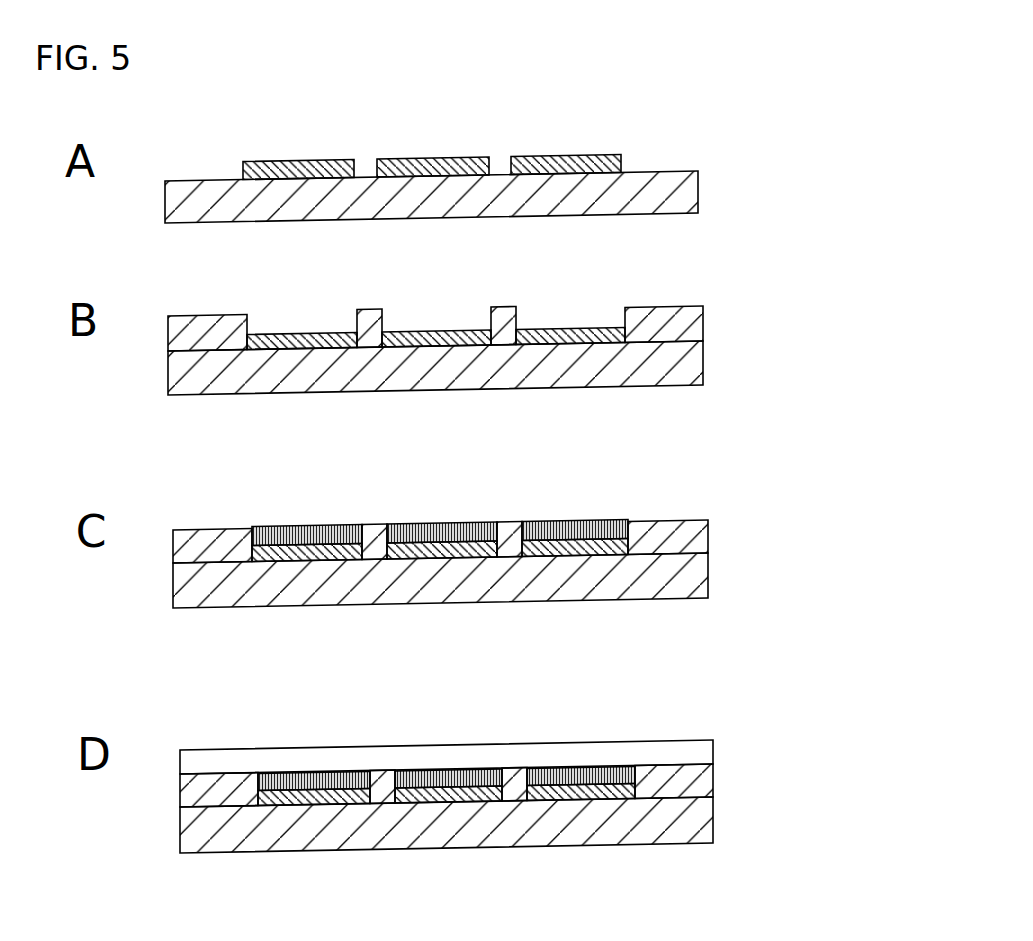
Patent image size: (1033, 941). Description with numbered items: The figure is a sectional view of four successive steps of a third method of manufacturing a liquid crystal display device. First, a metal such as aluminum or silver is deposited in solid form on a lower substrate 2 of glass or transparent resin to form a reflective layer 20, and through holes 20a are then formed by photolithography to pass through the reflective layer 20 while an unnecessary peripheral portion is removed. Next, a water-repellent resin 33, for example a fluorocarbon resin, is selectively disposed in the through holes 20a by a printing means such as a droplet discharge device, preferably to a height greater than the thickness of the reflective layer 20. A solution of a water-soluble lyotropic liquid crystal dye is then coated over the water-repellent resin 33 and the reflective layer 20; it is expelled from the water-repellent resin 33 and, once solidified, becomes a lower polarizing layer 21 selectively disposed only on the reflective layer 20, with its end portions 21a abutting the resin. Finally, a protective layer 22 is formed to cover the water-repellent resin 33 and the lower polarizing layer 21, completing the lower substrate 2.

The lower substrate 2 is at (692, 195).
The reflective layer 20 is at (436, 158).
The through hole 20a is at (357, 167).
The lower polarizing layer 21 is at (297, 529).
The end portion of conductive layer 21a is at (379, 530).
The protective layer 22 is at (250, 757).
The water-repellent resin 33 is at (370, 318).